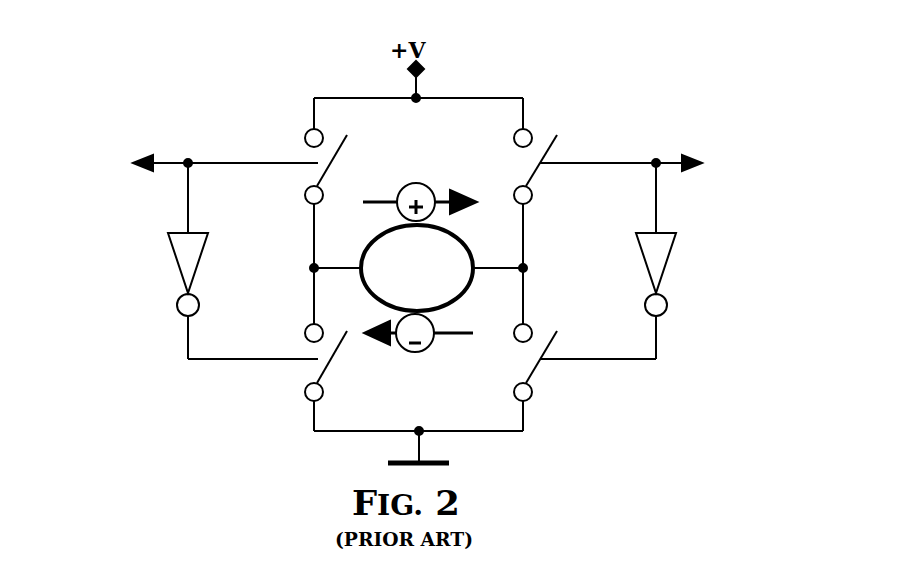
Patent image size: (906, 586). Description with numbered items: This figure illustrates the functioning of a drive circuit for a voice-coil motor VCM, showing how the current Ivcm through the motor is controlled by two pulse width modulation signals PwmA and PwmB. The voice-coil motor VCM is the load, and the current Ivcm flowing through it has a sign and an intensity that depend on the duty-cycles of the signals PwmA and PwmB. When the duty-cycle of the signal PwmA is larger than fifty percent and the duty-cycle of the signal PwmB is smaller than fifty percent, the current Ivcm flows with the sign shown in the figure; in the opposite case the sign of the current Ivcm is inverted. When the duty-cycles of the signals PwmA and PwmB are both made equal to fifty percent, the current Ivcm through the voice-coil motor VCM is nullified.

The pulse width modulation signal PwmA is at (180, 248).
The pulse width modulation signal PwmB is at (673, 248).
The voice-coil motor VCM is at (418, 268).
The current through the voice-coil motor Ivcm is at (420, 254).